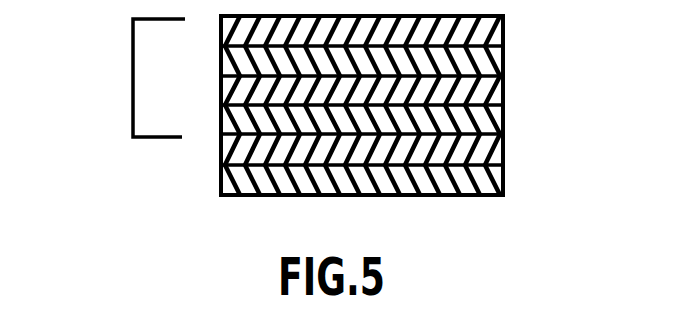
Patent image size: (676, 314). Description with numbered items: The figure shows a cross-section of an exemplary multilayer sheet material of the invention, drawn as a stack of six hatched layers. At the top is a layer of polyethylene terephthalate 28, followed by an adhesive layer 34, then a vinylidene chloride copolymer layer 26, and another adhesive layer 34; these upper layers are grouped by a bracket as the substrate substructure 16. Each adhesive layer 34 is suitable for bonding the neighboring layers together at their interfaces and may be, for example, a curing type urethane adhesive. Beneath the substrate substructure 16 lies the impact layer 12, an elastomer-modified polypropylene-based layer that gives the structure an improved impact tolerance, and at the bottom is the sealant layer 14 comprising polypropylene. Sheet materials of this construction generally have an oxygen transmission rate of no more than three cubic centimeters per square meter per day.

The substrate substructure 16 is at (133, 78).
The polyethylene terephthalate layer 28 is at (505, 28).
The adhesive layer 34 is at (505, 58).
The vinylidene chloride copolymer layer 26 is at (505, 89).
The impact layer 12 is at (505, 149).
The sealant layer 14 is at (505, 179).